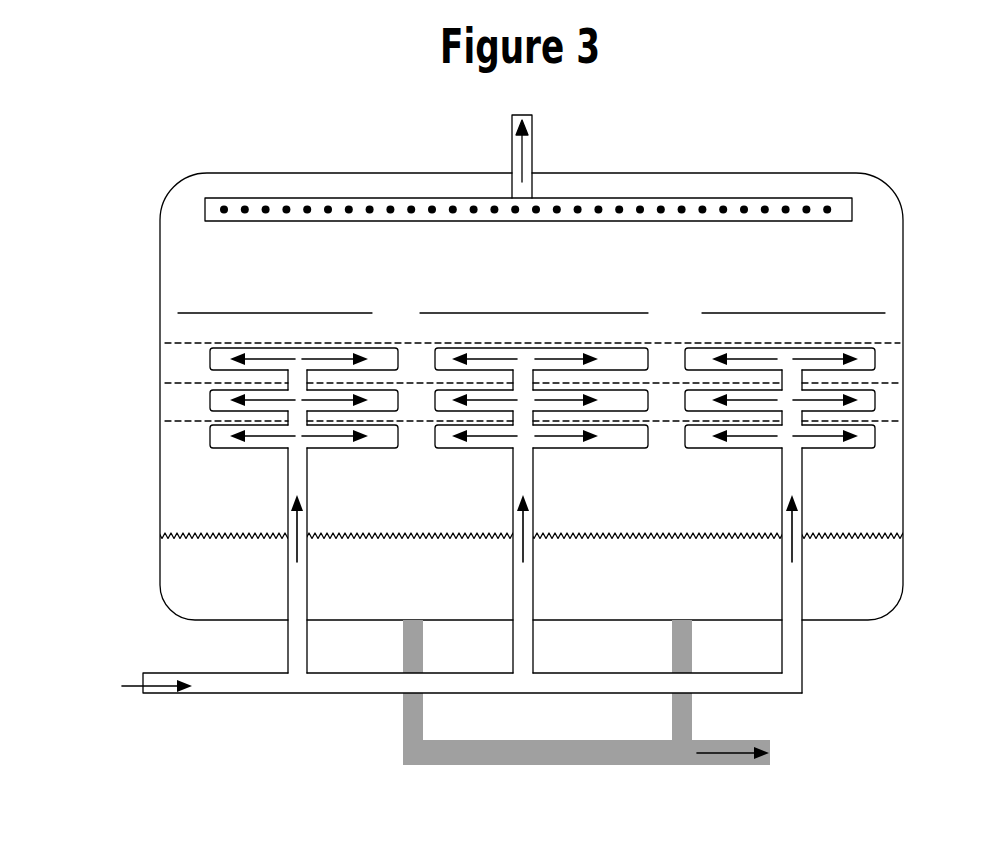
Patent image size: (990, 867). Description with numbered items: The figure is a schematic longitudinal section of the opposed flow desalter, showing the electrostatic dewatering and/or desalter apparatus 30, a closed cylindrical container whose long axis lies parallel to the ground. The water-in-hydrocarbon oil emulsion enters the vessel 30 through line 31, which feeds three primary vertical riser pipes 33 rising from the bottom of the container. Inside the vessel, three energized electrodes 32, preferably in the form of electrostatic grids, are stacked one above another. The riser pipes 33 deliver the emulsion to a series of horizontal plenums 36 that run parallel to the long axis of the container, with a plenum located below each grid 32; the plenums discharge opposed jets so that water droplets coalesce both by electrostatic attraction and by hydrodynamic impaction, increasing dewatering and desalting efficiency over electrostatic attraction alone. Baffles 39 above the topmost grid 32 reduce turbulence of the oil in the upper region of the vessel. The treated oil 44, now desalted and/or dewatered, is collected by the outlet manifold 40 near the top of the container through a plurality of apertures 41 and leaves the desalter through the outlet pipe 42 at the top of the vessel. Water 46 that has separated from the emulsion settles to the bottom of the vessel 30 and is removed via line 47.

The electrostatic dewatering and/or desalter apparatus 30 is at (660, 173).
The line 31 is at (151, 697).
The energized electrodes 32 is at (210, 424).
The primary vertical riser pipes 33 is at (308, 640).
The horizontal plenums 36 is at (876, 350).
The baffles 39 is at (214, 313).
The outlet manifold 40 is at (794, 222).
The apertures 41 is at (659, 205).
The outlet pipe 42 is at (534, 127).
The treated oil 44 is at (367, 277).
The water 46 is at (449, 586).
The line 47 is at (487, 768).